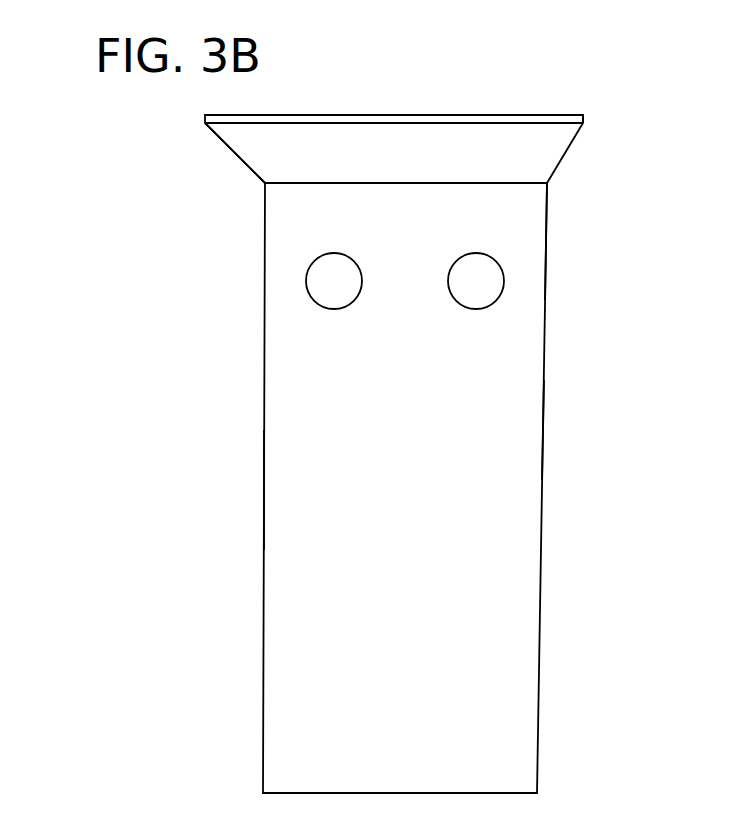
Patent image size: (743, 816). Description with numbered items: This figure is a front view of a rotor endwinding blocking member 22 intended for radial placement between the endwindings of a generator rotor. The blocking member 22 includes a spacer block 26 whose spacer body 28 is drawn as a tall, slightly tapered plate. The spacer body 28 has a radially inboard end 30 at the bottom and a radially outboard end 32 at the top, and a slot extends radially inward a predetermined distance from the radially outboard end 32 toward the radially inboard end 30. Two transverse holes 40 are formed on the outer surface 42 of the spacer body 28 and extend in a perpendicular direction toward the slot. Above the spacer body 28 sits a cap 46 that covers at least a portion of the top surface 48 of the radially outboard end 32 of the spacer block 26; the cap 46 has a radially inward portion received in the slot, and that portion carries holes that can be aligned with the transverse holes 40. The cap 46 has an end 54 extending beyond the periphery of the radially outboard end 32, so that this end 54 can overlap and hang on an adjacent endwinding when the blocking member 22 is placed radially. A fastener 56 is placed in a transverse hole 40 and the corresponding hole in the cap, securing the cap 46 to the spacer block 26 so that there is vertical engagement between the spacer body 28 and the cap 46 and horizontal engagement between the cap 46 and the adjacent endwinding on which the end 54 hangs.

The rotor endwinding blocking member 22 is at (647, 167).
The spacer block 26 is at (235, 489).
The spacer body 28 is at (502, 545).
The radially inboard end 30 is at (312, 757).
The radially outboard end 32 is at (525, 228).
The transverse hole 40 is at (307, 271).
The outer surface 42 is at (542, 433).
The cap 46 is at (253, 120).
The top surface 48 is at (265, 186).
The end of the cap 54 is at (531, 118).
The fastener 56 is at (481, 285).